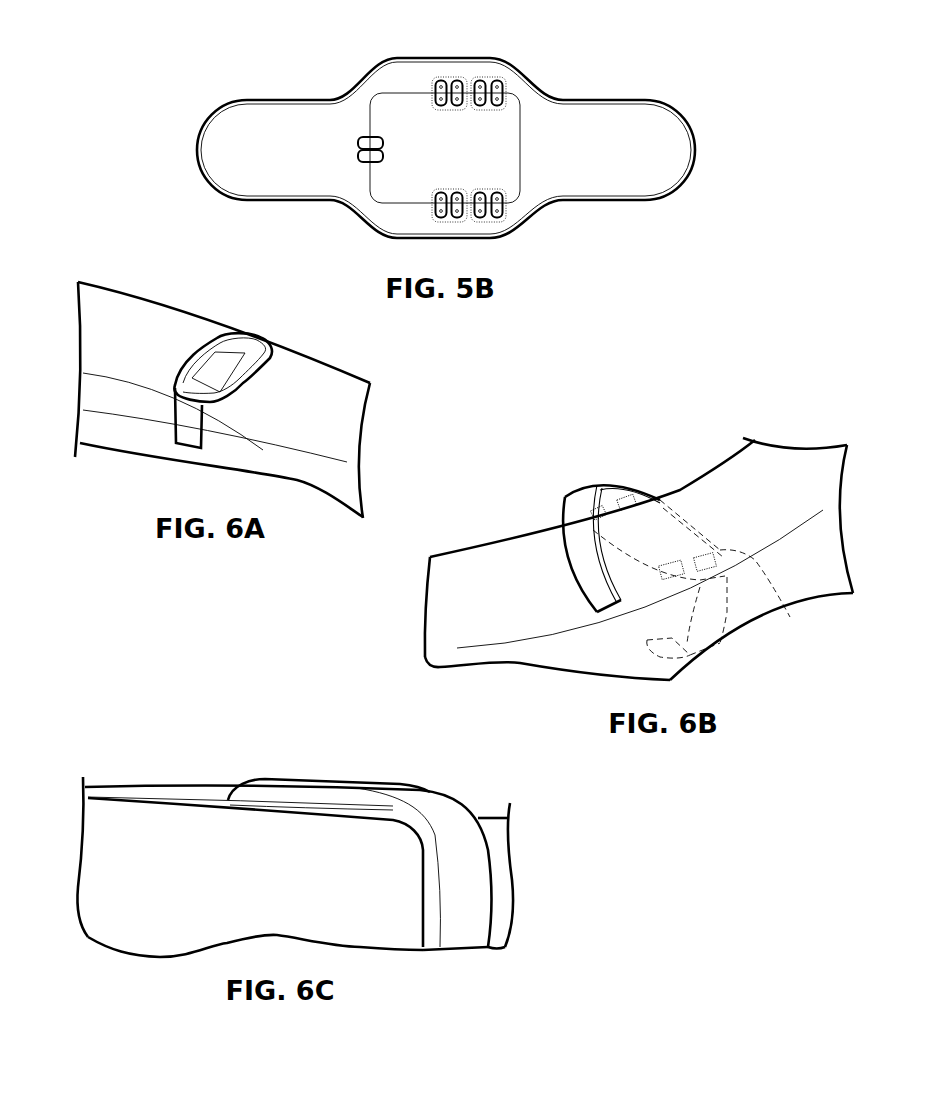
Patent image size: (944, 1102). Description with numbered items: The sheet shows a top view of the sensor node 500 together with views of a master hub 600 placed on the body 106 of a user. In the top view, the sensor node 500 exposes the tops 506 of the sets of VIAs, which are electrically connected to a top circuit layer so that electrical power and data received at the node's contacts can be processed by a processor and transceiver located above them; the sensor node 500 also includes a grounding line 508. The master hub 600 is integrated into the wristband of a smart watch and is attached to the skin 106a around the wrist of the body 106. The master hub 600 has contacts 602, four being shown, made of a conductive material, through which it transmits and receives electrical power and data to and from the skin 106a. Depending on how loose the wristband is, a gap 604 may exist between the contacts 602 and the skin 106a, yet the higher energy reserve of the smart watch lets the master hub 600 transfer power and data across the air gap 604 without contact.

In FIG. 5B, the sensor node 500 is at (662, 60).
In FIG. 5B, the tops of the sets of VIAs 506 is at (441, 80).
In FIG. 5B, the grounding line 508 is at (368, 137).
In FIG. 6A, the body 106 is at (150, 477).
In FIG. 6B, the body 106 is at (695, 405).
In FIG. 6C, the body 106 is at (467, 785).
In FIG. 6A, the skin 106a is at (310, 393).
In FIG. 6B, the skin 106a is at (487, 568).
In FIG. 6C, the skin 106a is at (133, 823).
In FIG. 6A, the master hub 600 is at (235, 332).
In FIG. 6C, the master hub 600 is at (275, 780).
In FIG. 6B, the contacts 602 is at (603, 498).
In FIG. 6C, the gap 604 is at (343, 806).